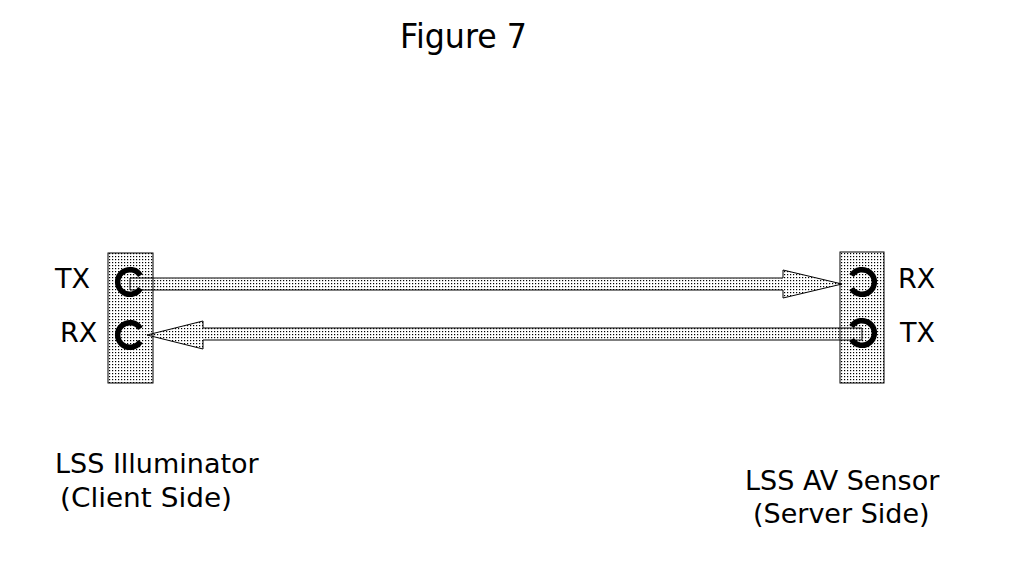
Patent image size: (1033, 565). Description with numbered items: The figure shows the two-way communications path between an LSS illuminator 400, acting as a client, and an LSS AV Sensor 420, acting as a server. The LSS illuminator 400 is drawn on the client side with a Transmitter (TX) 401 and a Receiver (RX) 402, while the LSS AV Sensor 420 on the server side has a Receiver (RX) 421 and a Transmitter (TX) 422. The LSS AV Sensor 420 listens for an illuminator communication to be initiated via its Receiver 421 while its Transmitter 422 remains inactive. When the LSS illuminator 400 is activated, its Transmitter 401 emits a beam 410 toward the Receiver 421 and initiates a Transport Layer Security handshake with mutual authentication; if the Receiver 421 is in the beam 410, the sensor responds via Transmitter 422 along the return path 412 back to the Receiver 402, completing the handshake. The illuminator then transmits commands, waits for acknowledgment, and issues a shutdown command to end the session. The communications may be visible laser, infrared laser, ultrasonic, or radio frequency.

The LSS illuminator 400 is at (153, 372).
The transmitter (TX) 401 is at (110, 253).
The receiver (RX) 402 is at (130, 347).
The beam 410 is at (377, 280).
The signal from AV sensor to illuminator 412 is at (513, 340).
The LSS AV Sensor 420 is at (840, 358).
The receiver (RX) 421 is at (850, 263).
The transmitter (TX) 422 is at (865, 347).